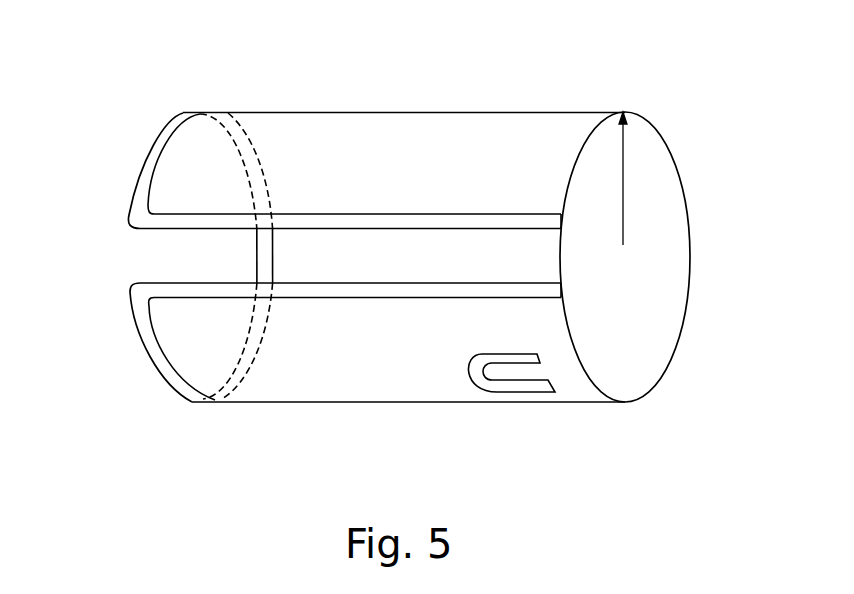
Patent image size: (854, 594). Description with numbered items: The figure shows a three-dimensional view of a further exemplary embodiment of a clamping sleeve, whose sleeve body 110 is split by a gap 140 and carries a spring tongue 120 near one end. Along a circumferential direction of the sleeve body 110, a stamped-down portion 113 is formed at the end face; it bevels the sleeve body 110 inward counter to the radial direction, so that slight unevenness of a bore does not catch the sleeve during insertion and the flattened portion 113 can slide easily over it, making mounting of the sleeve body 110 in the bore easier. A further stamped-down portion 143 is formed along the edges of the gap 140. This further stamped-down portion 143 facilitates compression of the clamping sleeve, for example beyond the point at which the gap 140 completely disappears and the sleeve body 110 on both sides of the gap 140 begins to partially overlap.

The sleeve body 110 is at (650, 335).
The stamped-down portion 113 is at (243, 130).
The spring tongue 120 is at (505, 372).
The gap 140 is at (399, 246).
The further stamped-down portion 143 is at (455, 222).